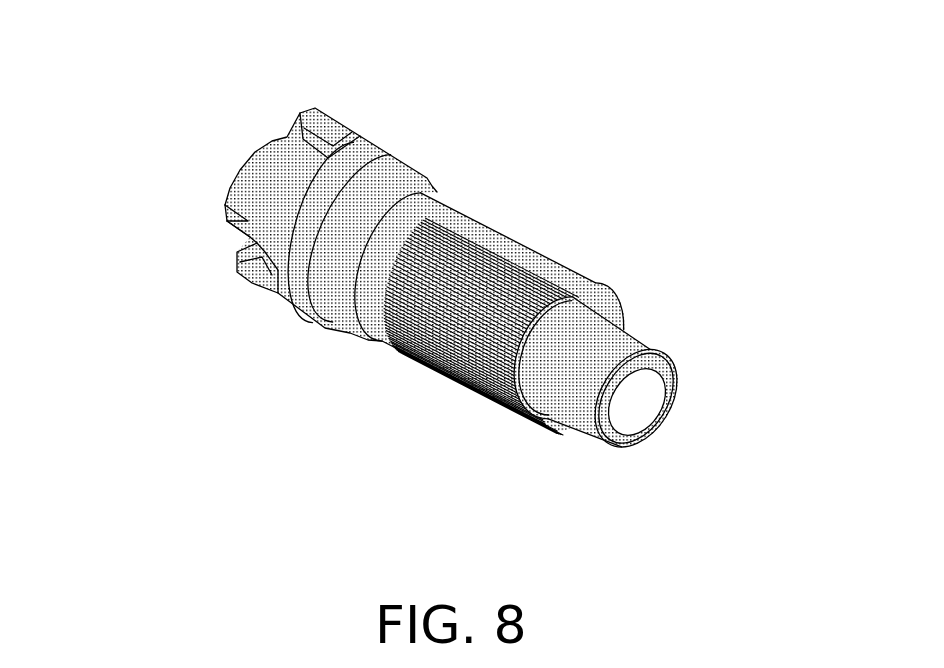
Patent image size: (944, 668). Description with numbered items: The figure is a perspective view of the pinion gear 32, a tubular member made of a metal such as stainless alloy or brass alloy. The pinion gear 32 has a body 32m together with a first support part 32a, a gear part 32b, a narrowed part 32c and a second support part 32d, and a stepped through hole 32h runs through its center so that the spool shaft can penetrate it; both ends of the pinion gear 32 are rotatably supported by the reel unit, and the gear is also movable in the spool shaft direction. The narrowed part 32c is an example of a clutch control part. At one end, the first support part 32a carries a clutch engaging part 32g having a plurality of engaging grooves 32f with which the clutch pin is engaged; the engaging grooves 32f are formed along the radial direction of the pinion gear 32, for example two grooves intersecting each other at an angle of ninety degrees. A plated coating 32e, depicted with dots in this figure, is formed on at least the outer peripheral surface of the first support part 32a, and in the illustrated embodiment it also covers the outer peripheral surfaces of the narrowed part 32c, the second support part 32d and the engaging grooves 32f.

The pinion gear 32 is at (448, 267).
The first support part 32a is at (330, 267).
The gear part 32b is at (661, 306).
The narrowed part 32c is at (507, 256).
The second support part 32d is at (621, 337).
The plated coating 32e is at (253, 287).
The engaging grooves 32f is at (307, 136).
The clutch engaging part 32g is at (230, 230).
The stepped through hole 32h is at (657, 393).
The body 32m is at (523, 208).